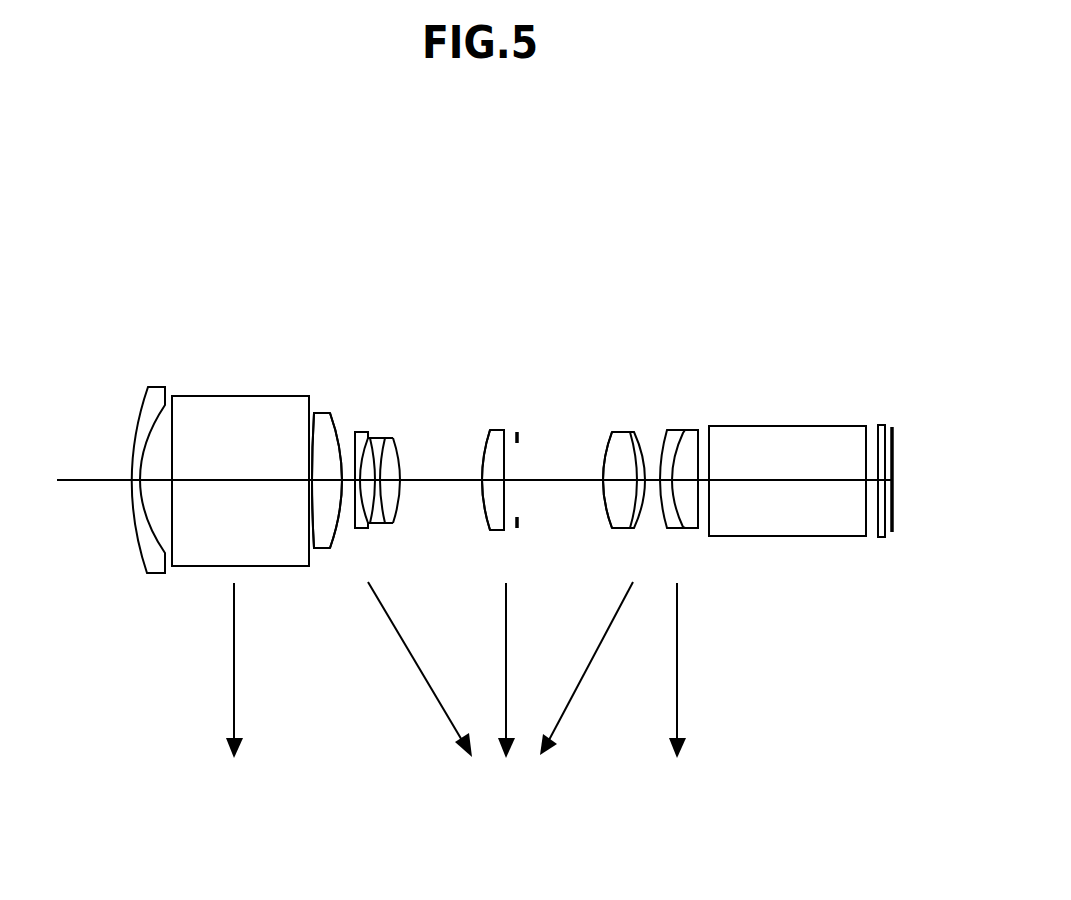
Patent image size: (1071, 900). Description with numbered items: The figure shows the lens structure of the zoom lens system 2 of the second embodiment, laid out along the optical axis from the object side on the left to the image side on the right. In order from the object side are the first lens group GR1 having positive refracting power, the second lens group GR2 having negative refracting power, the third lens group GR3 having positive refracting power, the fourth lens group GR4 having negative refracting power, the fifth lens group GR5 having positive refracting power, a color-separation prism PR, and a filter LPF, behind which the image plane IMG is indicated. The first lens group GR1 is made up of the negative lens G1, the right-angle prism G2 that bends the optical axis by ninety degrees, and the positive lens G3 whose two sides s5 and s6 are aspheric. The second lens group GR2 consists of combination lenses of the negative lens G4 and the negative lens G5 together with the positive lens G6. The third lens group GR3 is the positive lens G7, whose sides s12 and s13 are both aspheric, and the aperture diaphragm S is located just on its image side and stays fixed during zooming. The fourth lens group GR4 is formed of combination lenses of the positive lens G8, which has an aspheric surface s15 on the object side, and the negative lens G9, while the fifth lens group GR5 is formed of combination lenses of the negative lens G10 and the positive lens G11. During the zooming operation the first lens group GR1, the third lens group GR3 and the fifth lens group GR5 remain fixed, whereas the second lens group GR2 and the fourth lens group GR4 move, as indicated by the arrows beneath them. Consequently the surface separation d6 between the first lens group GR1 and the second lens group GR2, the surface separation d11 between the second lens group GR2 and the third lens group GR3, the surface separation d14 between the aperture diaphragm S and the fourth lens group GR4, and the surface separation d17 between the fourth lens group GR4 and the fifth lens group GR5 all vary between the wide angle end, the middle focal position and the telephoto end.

The zoom lens system 2 is at (569, 216).
The first lens group GR1 is at (330, 288).
The second lens group GR2 is at (453, 288).
The third lens group GR3 is at (523, 288).
The fourth lens group GR4 is at (643, 288).
The fifth lens group GR5 is at (768, 288).
The negative lens G1 is at (160, 383).
The right-angle prism G2 is at (240, 397).
The positive lens G3 is at (330, 410).
The negative lens G4 is at (365, 430).
The negative lens G5 is at (378, 437).
The positive lens G6 is at (398, 437).
The positive lens G7 is at (495, 430).
The positive lens G8 is at (610, 432).
The negative lens G9 is at (627, 432).
The negative lens G10 is at (678, 430).
The positive lens G11 is at (690, 430).
The aperture diaphragm S is at (517, 432).
The color-separation prism PR is at (778, 424).
The filter LPF is at (883, 424).
The image plane IMG is at (891, 510).
The side s5 is at (317, 532).
The side s6 is at (337, 414).
The side s12 is at (483, 462).
The side s13 is at (505, 460).
The side s15 is at (595, 497).
The surface separation d6 is at (340, 540).
The surface separation d11 is at (433, 500).
The surface separation d14 is at (570, 490).
The surface separation d17 is at (650, 490).